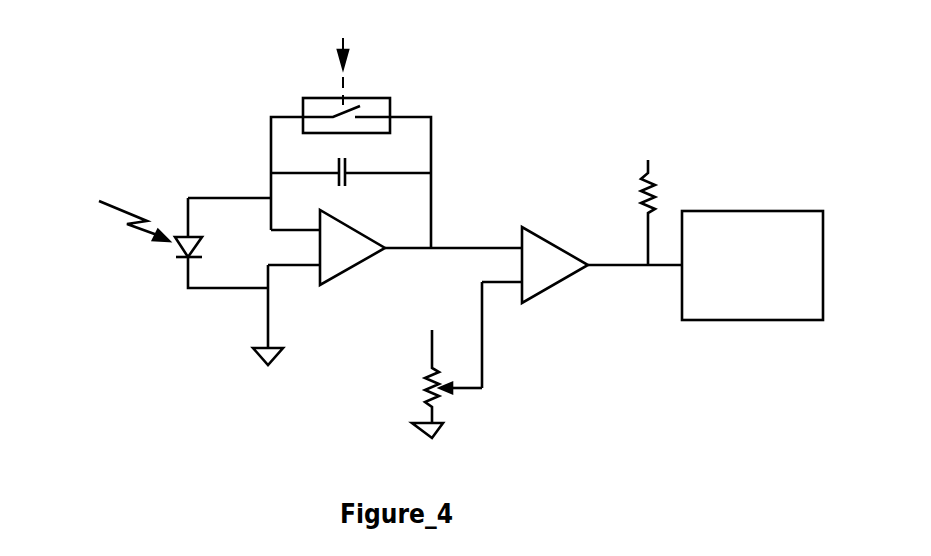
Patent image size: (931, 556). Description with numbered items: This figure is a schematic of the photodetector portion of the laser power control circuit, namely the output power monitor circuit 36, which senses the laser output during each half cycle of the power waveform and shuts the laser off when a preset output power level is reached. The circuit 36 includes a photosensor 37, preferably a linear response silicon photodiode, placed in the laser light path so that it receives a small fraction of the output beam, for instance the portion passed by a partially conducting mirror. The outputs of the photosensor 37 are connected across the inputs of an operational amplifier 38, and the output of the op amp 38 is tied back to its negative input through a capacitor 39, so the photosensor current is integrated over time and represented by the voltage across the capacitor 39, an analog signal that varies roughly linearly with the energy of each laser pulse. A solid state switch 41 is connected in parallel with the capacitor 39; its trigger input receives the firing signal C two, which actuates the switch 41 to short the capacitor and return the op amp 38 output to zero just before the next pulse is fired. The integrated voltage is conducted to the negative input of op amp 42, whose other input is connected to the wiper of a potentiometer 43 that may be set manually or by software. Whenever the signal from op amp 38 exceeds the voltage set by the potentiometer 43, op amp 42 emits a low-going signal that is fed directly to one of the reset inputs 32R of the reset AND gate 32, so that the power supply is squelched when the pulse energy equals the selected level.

The reset AND gate 32 is at (797, 211).
The reset input 32R is at (680, 268).
The output power monitor circuit 36 is at (180, 155).
The photosensor 37 is at (180, 245).
The operational amplifier 38 is at (343, 265).
The capacitor 39 is at (410, 150).
The solid state switch 41 is at (382, 98).
The op amp 42 is at (557, 240).
The potentiometer 43 is at (438, 405).